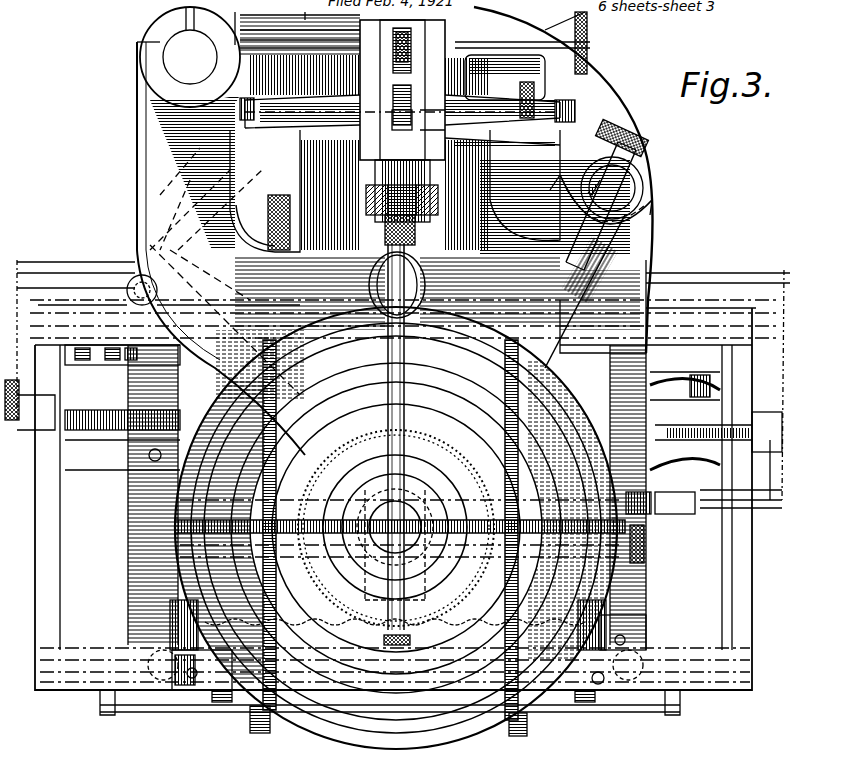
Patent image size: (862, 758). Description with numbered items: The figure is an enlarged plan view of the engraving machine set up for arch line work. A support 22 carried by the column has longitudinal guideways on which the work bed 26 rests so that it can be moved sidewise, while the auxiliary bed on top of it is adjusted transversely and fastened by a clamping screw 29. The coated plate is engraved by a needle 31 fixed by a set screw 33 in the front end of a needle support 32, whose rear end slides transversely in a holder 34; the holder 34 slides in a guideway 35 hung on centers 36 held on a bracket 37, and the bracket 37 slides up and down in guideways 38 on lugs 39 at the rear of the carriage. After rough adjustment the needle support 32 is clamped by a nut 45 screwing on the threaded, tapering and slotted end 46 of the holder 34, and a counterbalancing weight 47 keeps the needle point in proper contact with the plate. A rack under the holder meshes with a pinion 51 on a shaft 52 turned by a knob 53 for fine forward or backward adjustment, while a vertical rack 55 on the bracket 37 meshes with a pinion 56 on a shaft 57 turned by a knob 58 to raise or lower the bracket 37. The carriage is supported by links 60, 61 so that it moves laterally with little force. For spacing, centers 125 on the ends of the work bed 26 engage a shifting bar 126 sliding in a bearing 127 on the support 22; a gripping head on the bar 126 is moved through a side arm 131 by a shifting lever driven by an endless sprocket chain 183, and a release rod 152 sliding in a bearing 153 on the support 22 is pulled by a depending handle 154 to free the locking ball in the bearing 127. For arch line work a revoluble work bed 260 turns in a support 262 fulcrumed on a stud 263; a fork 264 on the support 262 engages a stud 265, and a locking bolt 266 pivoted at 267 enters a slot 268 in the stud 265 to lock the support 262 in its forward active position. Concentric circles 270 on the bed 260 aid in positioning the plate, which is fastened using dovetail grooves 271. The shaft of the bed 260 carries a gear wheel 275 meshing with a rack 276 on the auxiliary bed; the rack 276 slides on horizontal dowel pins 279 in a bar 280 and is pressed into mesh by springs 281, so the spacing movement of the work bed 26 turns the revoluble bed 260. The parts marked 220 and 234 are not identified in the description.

The support 22 is at (134, 548).
The work bed 26 is at (60, 640).
The clamping screw 29 is at (645, 548).
The needle 31 is at (405, 616).
The needle support 32 is at (392, 464).
The set screw 33 is at (377, 636).
The holder 34 is at (390, 168).
The guideway 35 is at (370, 30).
The centers 36 is at (240, 105).
The bracket 37 is at (508, 60).
The guideways 38 is at (350, 98).
The lugs 39 is at (310, 170).
The nut 45 is at (430, 192).
The forward threaded tapering and slotted end 46 is at (385, 225).
The counterbalancing weight 47 is at (426, 283).
The pinion 51 is at (410, 50).
The shaft 52 is at (565, 18).
The knob 53 is at (588, 42).
The rack 55 is at (402, 90).
The pinion 56 is at (402, 122).
The shaft 57 is at (432, 122).
The knob 58 is at (536, 92).
The link 60 is at (215, 240).
The link 61 is at (190, 202).
The centers 125 is at (30, 418).
The shifting bar 126 is at (112, 415).
The bearing 127 is at (140, 446).
The side arm 131 is at (678, 362).
The release rod 152 is at (692, 505).
The bearing 153 is at (660, 505).
The depending handle 154 is at (718, 515).
The endless sprocket chain 183 is at (118, 362).
The bracket 220 is at (202, 692).
The shaft 234 is at (505, 148).
The revoluble work bed 260 is at (315, 730).
The support 262 is at (146, 195).
The stud 263 is at (165, 52).
The fork 264 is at (635, 210).
The stud 265 is at (635, 188).
The locking bolt 266 is at (598, 178).
The pivot 267 is at (618, 250).
The slot 268 is at (640, 152).
The concentric circles 270 is at (433, 710).
The dovetail grooves 271 is at (578, 470).
The gear wheel 275 is at (320, 595).
The rack 276 is at (610, 640).
The horizontal dowel pins 279 is at (178, 625).
The bar 280 is at (204, 690).
The springs 281 is at (238, 702).